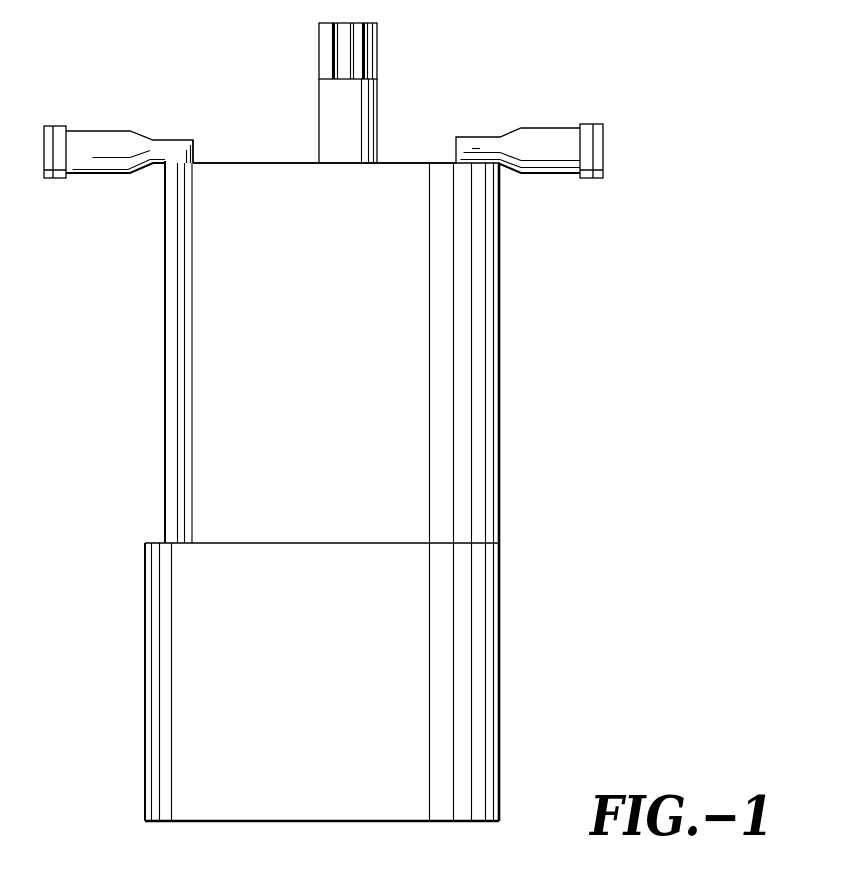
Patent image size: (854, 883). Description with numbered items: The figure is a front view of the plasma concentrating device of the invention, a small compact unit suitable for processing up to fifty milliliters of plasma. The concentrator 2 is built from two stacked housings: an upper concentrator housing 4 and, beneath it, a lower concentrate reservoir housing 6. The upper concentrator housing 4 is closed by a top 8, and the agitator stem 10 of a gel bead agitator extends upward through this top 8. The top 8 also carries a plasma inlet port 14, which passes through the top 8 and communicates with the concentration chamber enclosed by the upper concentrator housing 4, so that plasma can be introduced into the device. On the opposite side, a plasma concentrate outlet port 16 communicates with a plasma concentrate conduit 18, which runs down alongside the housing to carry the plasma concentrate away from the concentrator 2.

The concentrator 2 is at (522, 290).
The upper concentrator housing 4 is at (497, 238).
The lower concentrate reservoir housing 6 is at (489, 585).
The top 8 is at (252, 163).
The agitator stem 10 is at (368, 115).
The plasma inlet port 14 is at (552, 129).
The plasma concentrate outlet port 16 is at (106, 131).
The plasma concentrate conduit 18 is at (165, 292).